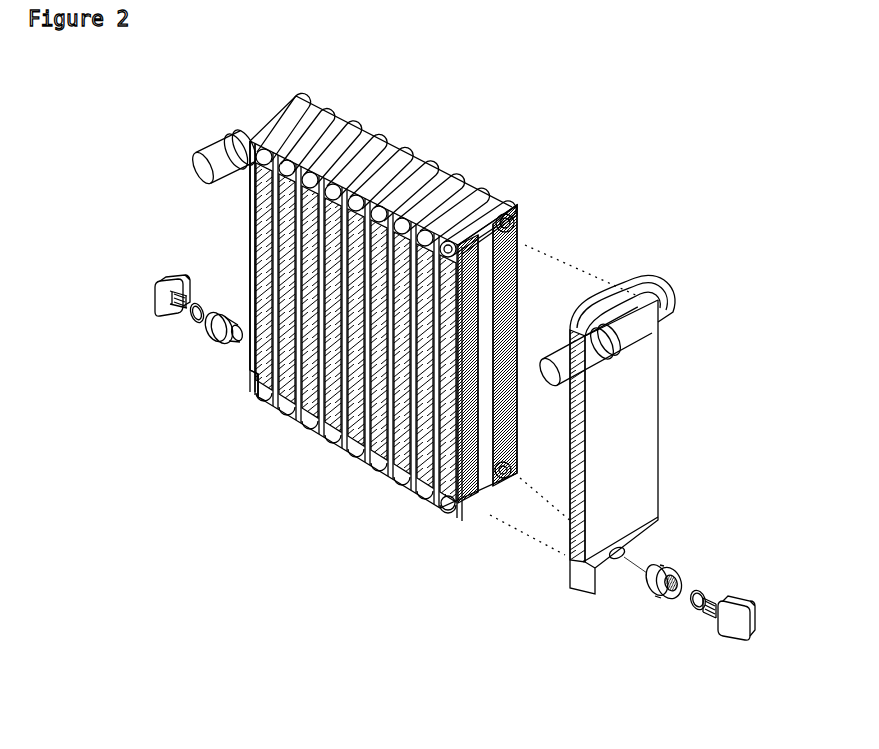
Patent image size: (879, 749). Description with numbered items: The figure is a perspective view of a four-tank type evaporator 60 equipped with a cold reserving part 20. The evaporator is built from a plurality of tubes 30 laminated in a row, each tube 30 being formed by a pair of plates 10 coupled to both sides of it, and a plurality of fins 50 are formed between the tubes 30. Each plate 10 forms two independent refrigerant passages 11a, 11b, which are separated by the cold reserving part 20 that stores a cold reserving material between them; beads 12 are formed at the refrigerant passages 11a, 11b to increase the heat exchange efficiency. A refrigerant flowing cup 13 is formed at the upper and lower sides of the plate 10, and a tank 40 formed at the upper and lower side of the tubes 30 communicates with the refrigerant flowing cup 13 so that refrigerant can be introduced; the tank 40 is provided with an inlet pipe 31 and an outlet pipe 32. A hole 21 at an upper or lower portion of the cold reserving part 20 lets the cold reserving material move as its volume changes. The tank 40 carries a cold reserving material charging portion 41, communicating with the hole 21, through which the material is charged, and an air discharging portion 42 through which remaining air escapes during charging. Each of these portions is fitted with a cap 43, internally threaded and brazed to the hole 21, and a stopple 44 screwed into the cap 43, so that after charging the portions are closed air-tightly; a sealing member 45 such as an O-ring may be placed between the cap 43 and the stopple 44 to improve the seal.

The four-tank type evaporator 60 is at (492, 82).
The plate 10 is at (520, 238).
The refrigerant passage 11a is at (392, 466).
The refrigerant passage 11b is at (521, 334).
The bead 12 is at (432, 500).
The refrigerant flowing cup 13 is at (518, 212).
The cold reserving part 20 is at (522, 306).
The hole 21 is at (487, 190).
The tube 30 is at (427, 149).
The inlet pipe 31 is at (218, 138).
The outlet pipe 32 is at (548, 388).
The tank 40 is at (393, 115).
The cold reserving material charging portion 41 is at (616, 568).
The air discharging portion 42 is at (255, 388).
The cap 43 is at (218, 346).
The stopple 44 is at (158, 316).
The washer 45 is at (195, 327).
The fin 50 is at (248, 232).